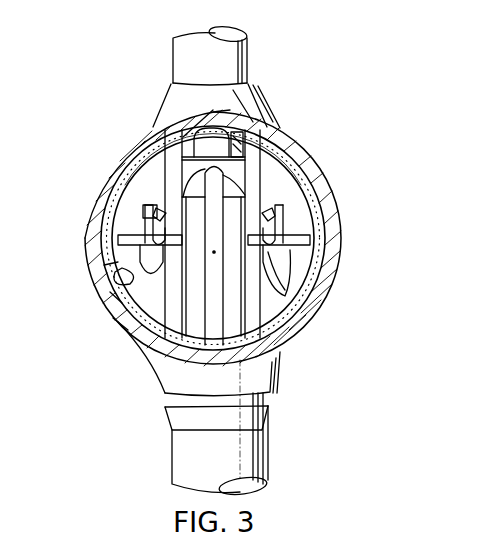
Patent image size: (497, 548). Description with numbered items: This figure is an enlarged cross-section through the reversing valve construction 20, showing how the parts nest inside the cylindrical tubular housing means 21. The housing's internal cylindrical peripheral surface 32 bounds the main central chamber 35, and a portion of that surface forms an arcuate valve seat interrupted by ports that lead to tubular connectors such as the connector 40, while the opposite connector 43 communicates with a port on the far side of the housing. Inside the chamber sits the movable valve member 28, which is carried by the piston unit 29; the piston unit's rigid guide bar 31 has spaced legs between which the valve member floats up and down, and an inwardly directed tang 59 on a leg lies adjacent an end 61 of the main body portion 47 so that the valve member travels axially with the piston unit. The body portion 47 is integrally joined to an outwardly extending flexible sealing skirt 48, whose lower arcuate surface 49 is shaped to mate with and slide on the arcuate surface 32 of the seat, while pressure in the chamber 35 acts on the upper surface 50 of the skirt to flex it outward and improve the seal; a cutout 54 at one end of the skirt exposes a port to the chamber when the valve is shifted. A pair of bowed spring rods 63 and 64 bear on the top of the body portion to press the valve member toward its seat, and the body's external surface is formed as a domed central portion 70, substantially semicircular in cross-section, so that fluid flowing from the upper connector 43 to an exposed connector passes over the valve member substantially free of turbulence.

The reversing valve construction 20 is at (377, 67).
The tubular housing means 21 is at (332, 186).
The movable valve member 28 is at (150, 160).
The piston unit 29 is at (290, 165).
The guide member or bar 31 is at (318, 220).
The internal cylindrical peripheral surface 32 is at (140, 208).
The main central chamber 35 is at (105, 255).
The metallic tubular connector 40 is at (172, 458).
The metallic tubular connector 43 is at (180, 52).
The main body portion 47 is at (273, 186).
The flexible sealing skirt 48 is at (118, 284).
The lower arcuate surface 49 is at (118, 312).
The upper surface 50 is at (108, 273).
The cutout 54 is at (150, 356).
The tang 59 is at (300, 247).
The end of the body portion 61 is at (258, 273).
The spring rod 63 is at (112, 174).
The spring rod 64 is at (305, 176).
The domed central portion 70 is at (253, 123).